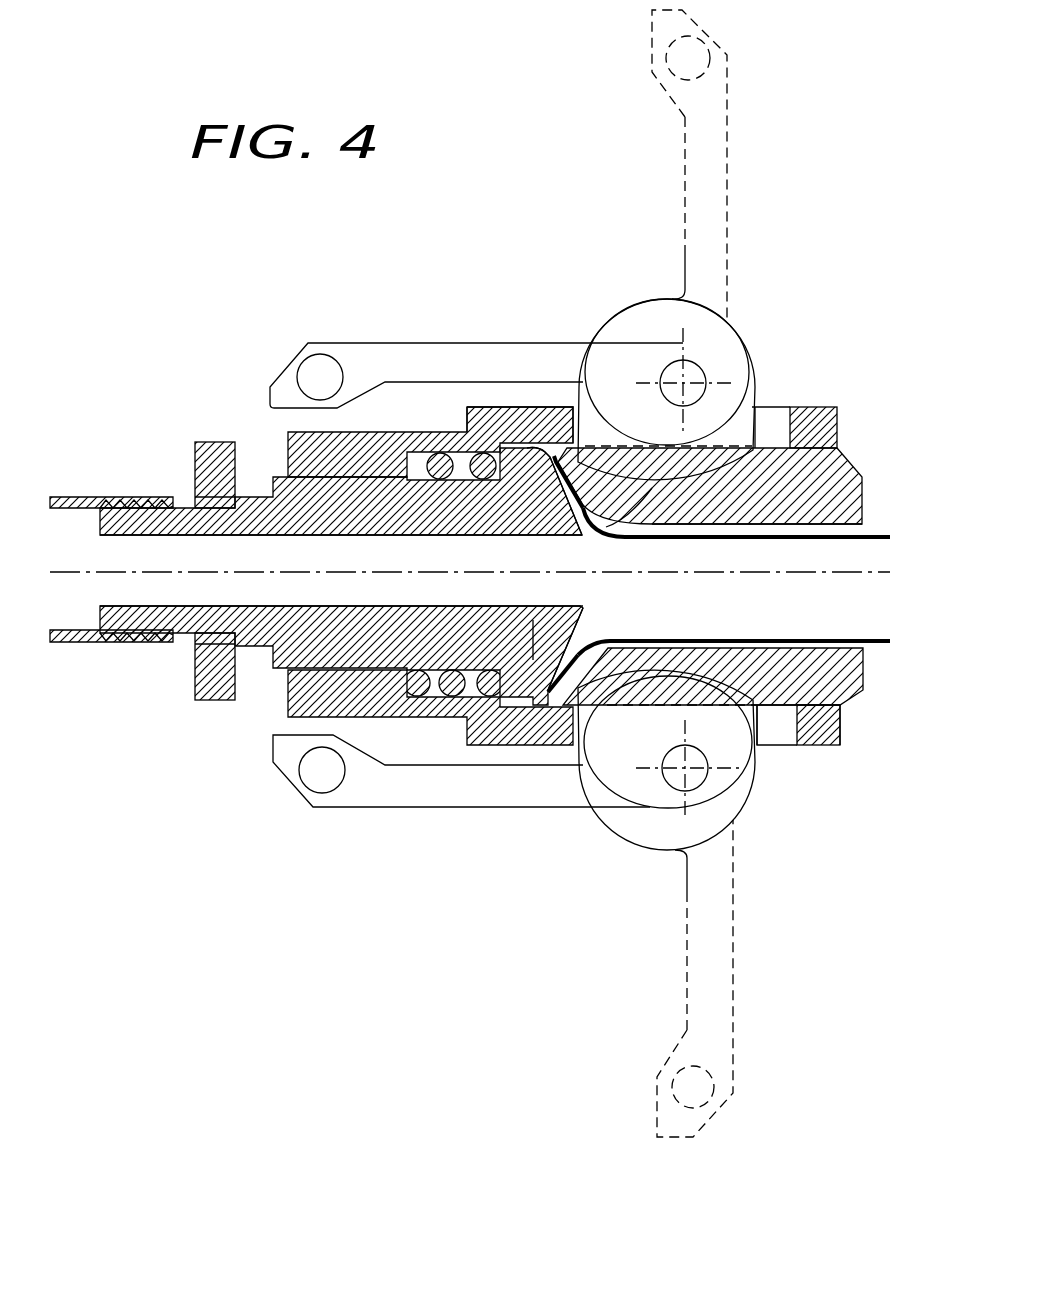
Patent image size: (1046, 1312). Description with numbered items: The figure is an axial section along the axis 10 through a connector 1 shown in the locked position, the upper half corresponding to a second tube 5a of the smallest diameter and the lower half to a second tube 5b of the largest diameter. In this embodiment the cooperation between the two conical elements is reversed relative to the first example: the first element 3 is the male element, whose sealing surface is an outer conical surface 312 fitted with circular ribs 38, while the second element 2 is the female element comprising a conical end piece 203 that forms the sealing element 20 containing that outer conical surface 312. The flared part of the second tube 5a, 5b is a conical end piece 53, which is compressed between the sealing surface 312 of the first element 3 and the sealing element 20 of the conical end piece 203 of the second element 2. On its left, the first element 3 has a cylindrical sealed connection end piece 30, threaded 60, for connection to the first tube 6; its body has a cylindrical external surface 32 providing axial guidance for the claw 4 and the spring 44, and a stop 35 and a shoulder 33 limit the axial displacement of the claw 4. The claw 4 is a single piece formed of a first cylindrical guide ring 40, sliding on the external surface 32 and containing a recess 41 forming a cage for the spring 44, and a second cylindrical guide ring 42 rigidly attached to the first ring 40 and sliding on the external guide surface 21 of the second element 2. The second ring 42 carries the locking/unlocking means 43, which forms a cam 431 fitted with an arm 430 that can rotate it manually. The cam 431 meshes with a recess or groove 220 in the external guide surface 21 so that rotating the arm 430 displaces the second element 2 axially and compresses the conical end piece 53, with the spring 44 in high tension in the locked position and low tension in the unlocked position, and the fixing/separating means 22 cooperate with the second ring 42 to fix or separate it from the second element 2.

The connector 1 is at (303, 813).
The second element 2 is at (845, 480).
The first element 3 is at (285, 660).
The claw 4 is at (420, 437).
The second tube 5a is at (807, 543).
The second tube 5b is at (740, 637).
The first tube 6 is at (115, 508).
The axis 10 is at (112, 572).
The sealing element 20 is at (663, 538).
The external guide surface 21 is at (795, 697).
The fixing/separating means 22 is at (840, 760).
The cylindrical sealed connection end piece 30 is at (98, 520).
The cylindrical external surface 32 is at (327, 655).
The shoulder 33 is at (520, 457).
The stop 35 is at (217, 703).
The circular ribs 38 is at (547, 598).
The first cylindrical guide ring 40 is at (313, 447).
The recess 41 is at (430, 690).
The second cylindrical guide ring 42 is at (815, 418).
The locking/unlocking means 43 is at (596, 328).
The spring 44 is at (452, 690).
The conical end piece 53 is at (593, 547).
The thread 60 is at (155, 643).
The conical end piece 203 is at (610, 538).
The recess or groove 220 is at (757, 747).
The outer conical surface 312 is at (563, 500).
The arm 430 is at (452, 344).
The cam 431 is at (750, 388).